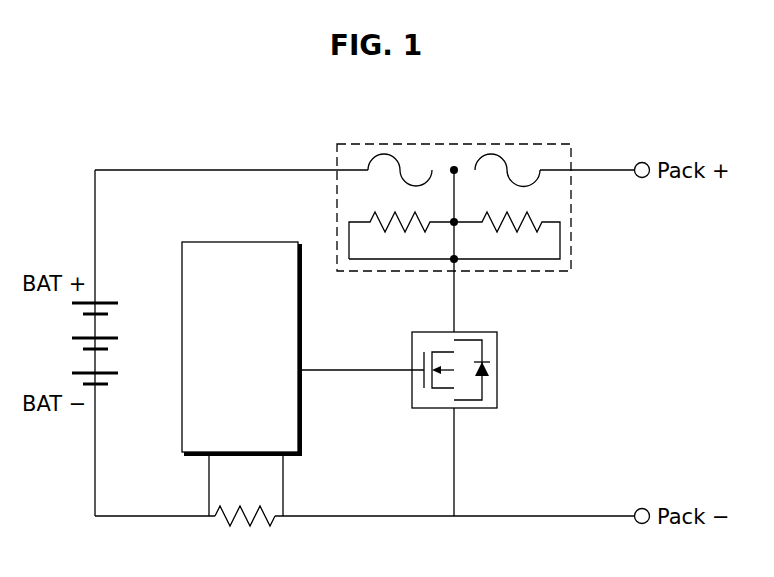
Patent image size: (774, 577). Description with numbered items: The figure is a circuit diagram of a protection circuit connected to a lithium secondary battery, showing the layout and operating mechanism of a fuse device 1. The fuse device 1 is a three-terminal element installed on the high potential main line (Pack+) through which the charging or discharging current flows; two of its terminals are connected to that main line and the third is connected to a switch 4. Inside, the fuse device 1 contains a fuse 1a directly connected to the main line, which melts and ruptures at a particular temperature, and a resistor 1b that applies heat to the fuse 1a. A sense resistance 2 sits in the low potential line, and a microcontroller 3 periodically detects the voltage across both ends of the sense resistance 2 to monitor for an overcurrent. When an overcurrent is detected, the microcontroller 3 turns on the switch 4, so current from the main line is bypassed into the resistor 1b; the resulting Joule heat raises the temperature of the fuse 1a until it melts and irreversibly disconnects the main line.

The fuse device 1 is at (539, 144).
The fuse 1a is at (383, 153).
The resistor 1b is at (390, 227).
The sense resistance 2 is at (240, 528).
The microcontroller 3 is at (239, 242).
The switch 4 is at (498, 370).